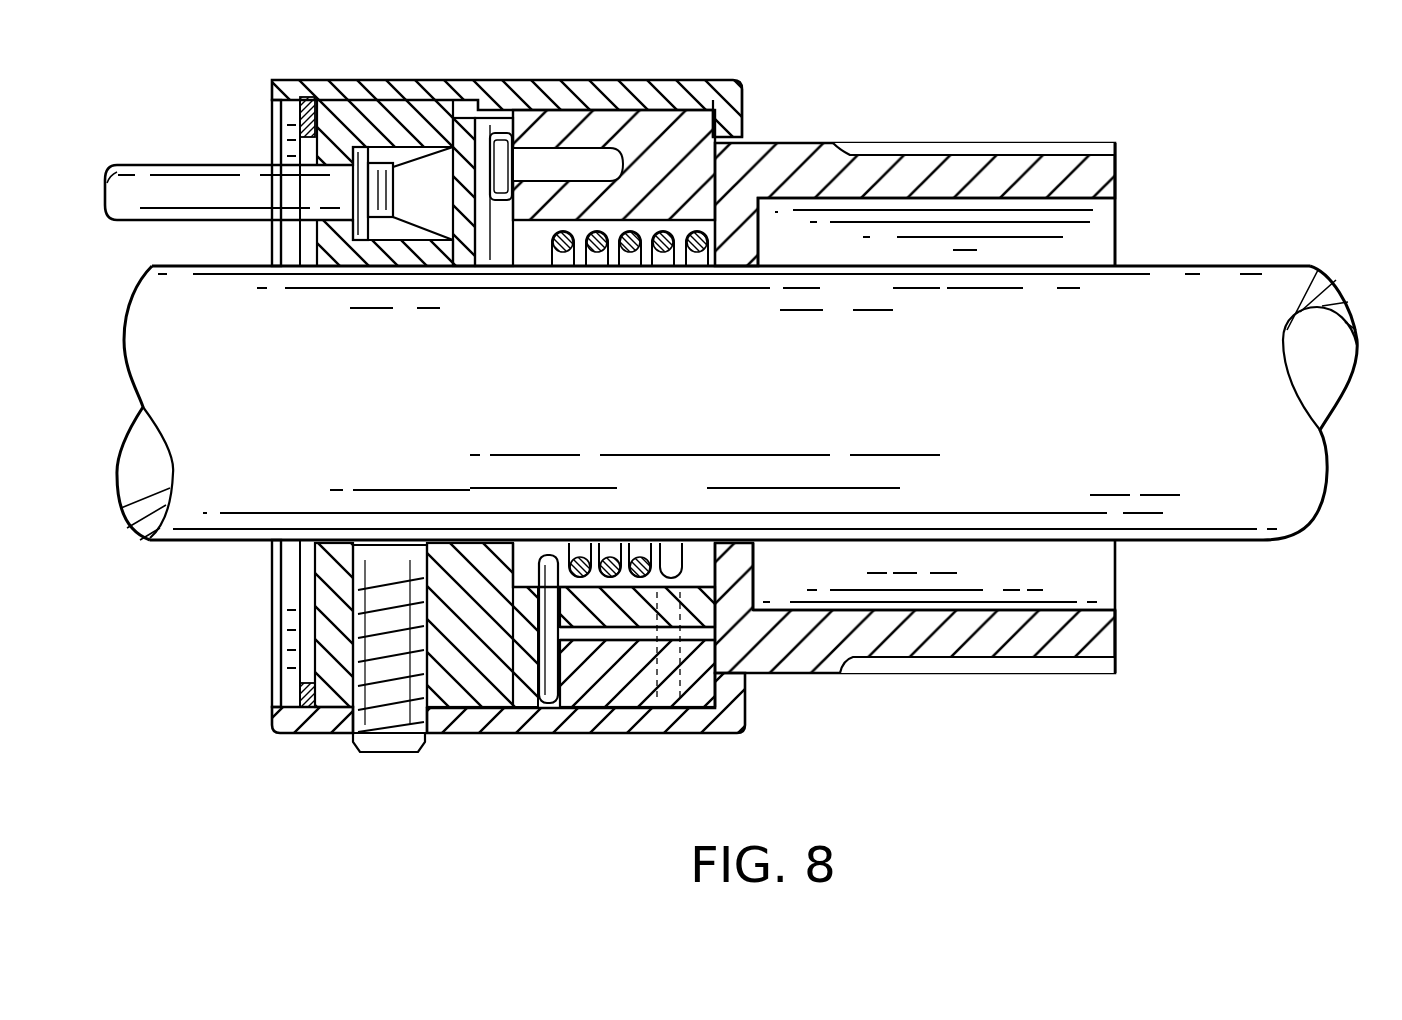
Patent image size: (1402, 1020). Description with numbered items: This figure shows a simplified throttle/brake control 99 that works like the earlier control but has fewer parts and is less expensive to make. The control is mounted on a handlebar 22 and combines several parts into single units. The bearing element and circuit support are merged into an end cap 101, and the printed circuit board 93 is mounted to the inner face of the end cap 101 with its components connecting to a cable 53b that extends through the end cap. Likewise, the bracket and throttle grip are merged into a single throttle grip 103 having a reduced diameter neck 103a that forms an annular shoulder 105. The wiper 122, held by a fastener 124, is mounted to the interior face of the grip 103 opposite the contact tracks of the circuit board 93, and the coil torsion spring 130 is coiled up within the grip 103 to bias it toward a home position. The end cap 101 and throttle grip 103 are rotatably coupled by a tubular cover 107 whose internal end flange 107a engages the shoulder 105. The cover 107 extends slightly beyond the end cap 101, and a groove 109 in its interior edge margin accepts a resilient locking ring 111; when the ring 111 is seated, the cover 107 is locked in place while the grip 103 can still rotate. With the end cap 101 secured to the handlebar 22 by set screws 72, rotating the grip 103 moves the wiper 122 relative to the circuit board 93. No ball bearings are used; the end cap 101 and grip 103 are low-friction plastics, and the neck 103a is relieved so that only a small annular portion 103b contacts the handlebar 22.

The handlebar 22 is at (1180, 310).
The cable 53b is at (180, 180).
The set screws 72 is at (380, 755).
The printed circuit board 93 is at (455, 118).
The throttle/brake control 99 is at (938, 705).
The end cap 101 is at (370, 117).
The throttle grip 103 is at (643, 130).
The reduced diameter neck 103a is at (1118, 640).
The annular portion 103b is at (735, 562).
The annular shoulder 105 is at (735, 112).
The tubular cover 107 is at (418, 90).
The internal end flange 107a is at (727, 100).
The groove 109 is at (303, 737).
The resilient locking ring 111 is at (300, 690).
The wiper 122 is at (484, 170).
The fastener 124 is at (583, 132).
The coil torsion spring 130 is at (672, 548).